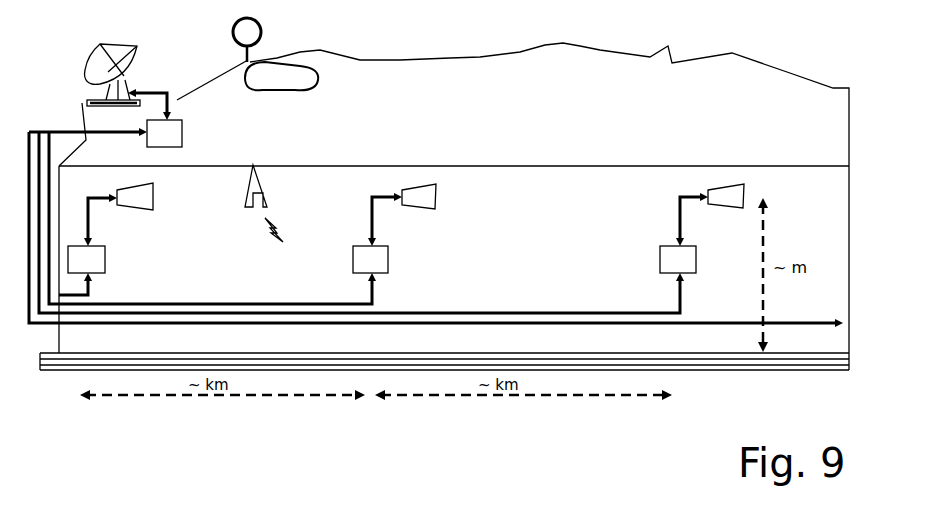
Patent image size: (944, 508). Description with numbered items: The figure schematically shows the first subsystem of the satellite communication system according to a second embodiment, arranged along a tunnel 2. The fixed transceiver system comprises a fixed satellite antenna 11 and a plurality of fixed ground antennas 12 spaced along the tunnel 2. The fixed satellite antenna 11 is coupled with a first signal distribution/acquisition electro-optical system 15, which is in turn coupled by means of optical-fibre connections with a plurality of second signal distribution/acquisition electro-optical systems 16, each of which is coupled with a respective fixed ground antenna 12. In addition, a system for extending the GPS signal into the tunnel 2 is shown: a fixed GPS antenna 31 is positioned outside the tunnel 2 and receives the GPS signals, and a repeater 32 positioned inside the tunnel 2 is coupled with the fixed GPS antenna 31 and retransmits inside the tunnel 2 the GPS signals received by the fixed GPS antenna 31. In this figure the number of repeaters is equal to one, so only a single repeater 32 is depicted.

The tunnel 2 is at (535, 248).
The fixed satellite antenna 11 is at (133, 60).
The fixed ground antennas 12 is at (143, 197).
The first signal distribution/acquisition electro-optical system 15 is at (168, 135).
The second signal distribution/acquisition electro-optical systems 16 is at (98, 262).
The fixed GPS antenna 31 is at (262, 32).
The repeater 32 is at (255, 90).